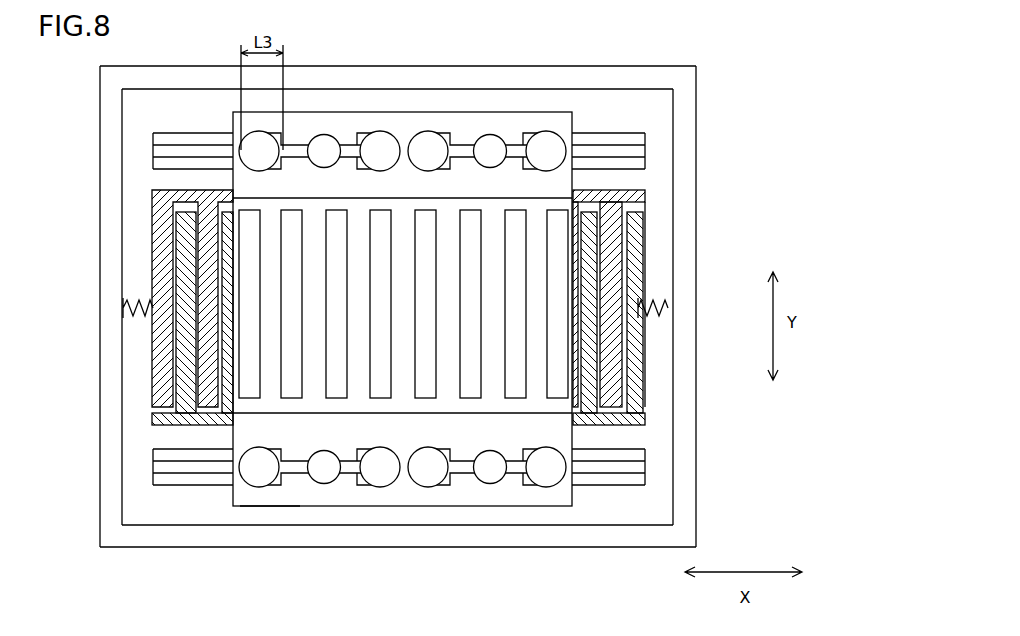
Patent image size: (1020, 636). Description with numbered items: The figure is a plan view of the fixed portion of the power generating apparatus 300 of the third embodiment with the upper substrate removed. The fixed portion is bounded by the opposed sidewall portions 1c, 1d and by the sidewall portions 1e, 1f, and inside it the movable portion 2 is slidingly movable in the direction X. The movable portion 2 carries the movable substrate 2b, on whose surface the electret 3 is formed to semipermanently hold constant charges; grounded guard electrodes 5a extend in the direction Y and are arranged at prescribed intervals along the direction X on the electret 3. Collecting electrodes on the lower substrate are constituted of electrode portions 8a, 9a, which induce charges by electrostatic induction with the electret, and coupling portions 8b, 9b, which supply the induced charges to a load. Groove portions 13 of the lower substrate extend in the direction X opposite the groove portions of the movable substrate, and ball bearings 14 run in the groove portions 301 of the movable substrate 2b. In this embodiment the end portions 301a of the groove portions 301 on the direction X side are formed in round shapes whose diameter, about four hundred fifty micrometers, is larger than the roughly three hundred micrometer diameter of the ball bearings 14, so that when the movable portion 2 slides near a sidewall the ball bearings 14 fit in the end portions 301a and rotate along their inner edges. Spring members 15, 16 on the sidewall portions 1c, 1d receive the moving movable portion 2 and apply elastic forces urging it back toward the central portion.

The power generating apparatus 300 is at (731, 58).
The sidewall portion 1e is at (173, 82).
The sidewall portion 1c is at (112, 415).
The sidewall portion 1d is at (683, 470).
The sidewall portion 1f is at (155, 537).
The movable portion 2 is at (232, 493).
The movable substrate 2b is at (258, 502).
The electret 3 is at (403, 309).
The guard electrodes 5a is at (517, 215).
The groove portions 13 is at (638, 137).
The ball bearings 14 is at (323, 140).
The groove portions 301 is at (462, 142).
The end portions 301a is at (377, 140).
The electrode portions 8a is at (153, 248).
The coupling portion 8b is at (645, 192).
The electrode portions 9a is at (180, 360).
The coupling portion 9b is at (612, 424).
The spring member 15 is at (122, 297).
The spring member 16 is at (668, 312).